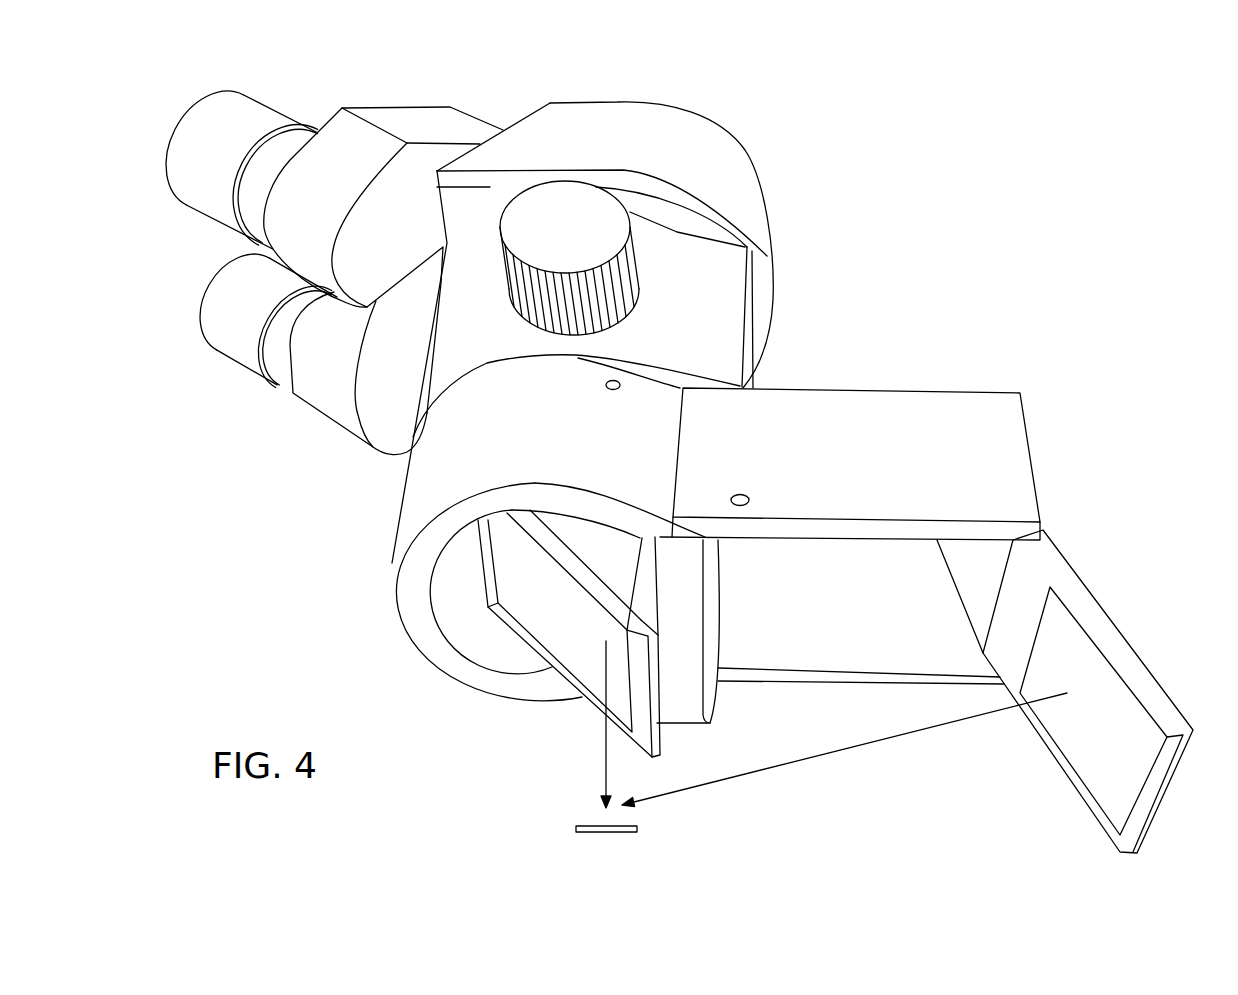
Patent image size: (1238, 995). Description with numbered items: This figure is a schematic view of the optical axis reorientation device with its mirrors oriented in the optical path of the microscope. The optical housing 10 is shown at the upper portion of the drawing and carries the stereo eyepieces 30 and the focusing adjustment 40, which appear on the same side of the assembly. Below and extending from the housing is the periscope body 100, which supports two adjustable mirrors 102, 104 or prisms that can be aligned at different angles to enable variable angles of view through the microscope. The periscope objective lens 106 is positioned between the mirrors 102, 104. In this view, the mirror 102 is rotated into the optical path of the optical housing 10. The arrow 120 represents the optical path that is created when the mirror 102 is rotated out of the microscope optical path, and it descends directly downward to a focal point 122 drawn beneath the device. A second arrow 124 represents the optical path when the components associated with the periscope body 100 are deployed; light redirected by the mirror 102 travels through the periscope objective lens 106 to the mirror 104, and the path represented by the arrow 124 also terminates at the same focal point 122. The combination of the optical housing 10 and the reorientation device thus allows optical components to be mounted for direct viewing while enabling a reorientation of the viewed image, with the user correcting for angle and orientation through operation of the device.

The optical housing 10 is at (638, 123).
The stereo eyepieces 30 is at (347, 179).
The focusing adjustment 40 is at (633, 257).
The periscope body 100 is at (892, 459).
The mirror 102 is at (550, 537).
The mirror 104 is at (990, 565).
The periscope objective lens 106 is at (713, 700).
The arrow 120 is at (606, 762).
The focal point 122 is at (595, 833).
The second arrow 124 is at (873, 744).